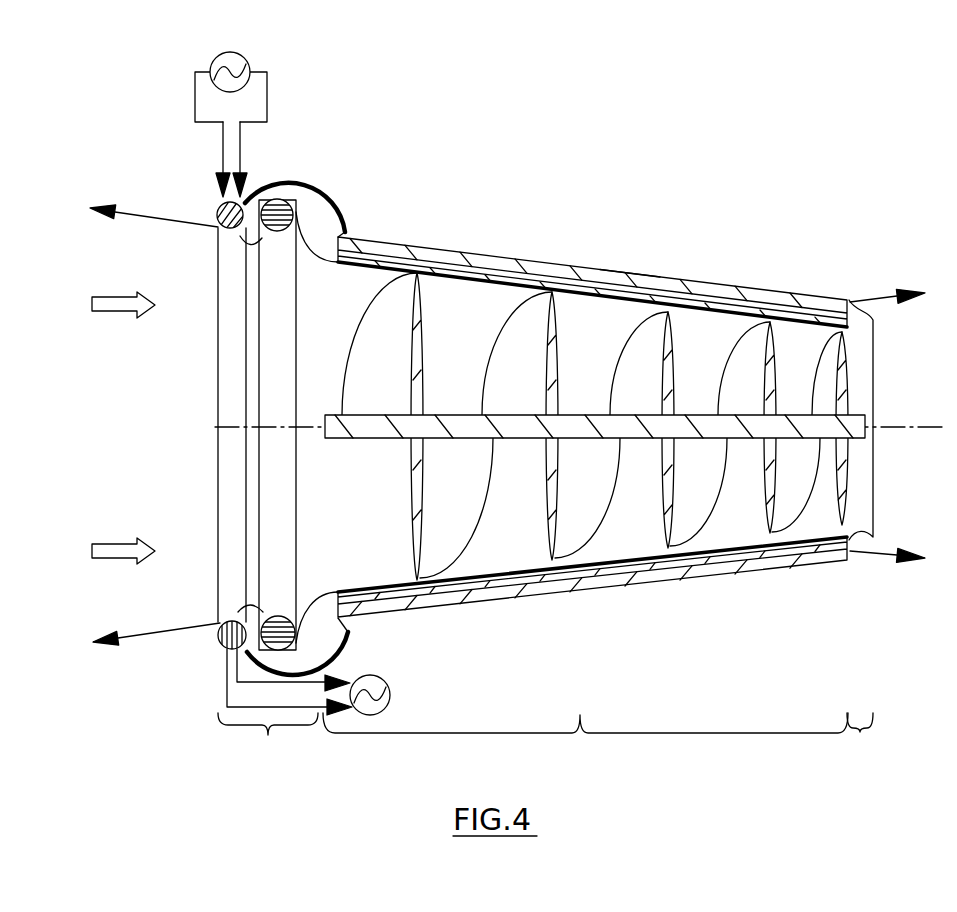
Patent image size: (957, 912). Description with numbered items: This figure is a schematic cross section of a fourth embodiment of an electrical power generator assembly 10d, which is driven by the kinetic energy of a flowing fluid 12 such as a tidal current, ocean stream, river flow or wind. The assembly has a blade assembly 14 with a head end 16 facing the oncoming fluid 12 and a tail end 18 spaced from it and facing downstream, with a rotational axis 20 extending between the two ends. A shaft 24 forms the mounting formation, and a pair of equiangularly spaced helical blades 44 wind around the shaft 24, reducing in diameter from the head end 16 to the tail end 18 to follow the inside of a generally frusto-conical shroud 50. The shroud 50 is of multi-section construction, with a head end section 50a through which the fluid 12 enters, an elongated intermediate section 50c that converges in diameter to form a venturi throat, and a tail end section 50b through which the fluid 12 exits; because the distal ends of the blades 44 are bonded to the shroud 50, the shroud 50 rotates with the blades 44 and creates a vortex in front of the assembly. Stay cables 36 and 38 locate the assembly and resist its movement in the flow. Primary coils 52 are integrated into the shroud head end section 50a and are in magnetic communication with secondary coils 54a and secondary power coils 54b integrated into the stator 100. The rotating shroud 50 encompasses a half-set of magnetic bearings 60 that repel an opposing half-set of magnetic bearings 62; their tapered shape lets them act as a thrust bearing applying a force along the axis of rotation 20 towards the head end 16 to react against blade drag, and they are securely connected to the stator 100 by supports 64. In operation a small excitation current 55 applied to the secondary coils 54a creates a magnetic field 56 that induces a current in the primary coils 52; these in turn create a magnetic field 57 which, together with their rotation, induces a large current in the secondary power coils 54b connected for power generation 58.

The electrical power generator assembly 10d is at (502, 150).
The flowing fluid 12 is at (113, 307).
The blade assembly 14 is at (715, 316).
The head end 16 is at (385, 486).
The tail end 18 is at (857, 503).
The rotational axis 20 is at (297, 410).
The shaft 24 is at (363, 420).
The stay cables 36 is at (155, 215).
The stay cables 38 is at (890, 305).
The helical blades 44 is at (500, 365).
The shroud 50 is at (318, 256).
The head end section 50a is at (268, 747).
The tail end section 50b is at (866, 744).
The intermediate section 50c is at (585, 745).
The primary coils 52 is at (275, 203).
The secondary coils 54a is at (513, 263).
The secondary power coils 54b is at (550, 617).
The excitation current 55 is at (262, 95).
The magnetic field 56 is at (243, 290).
The magnetic field 57 is at (230, 610).
The power generation 58 is at (392, 705).
The half-set of magnetic bearings 60 is at (623, 300).
The opposing half-set of magnetic bearings 62 is at (668, 582).
The supports 64 is at (330, 193).
The stator 100 is at (217, 372).